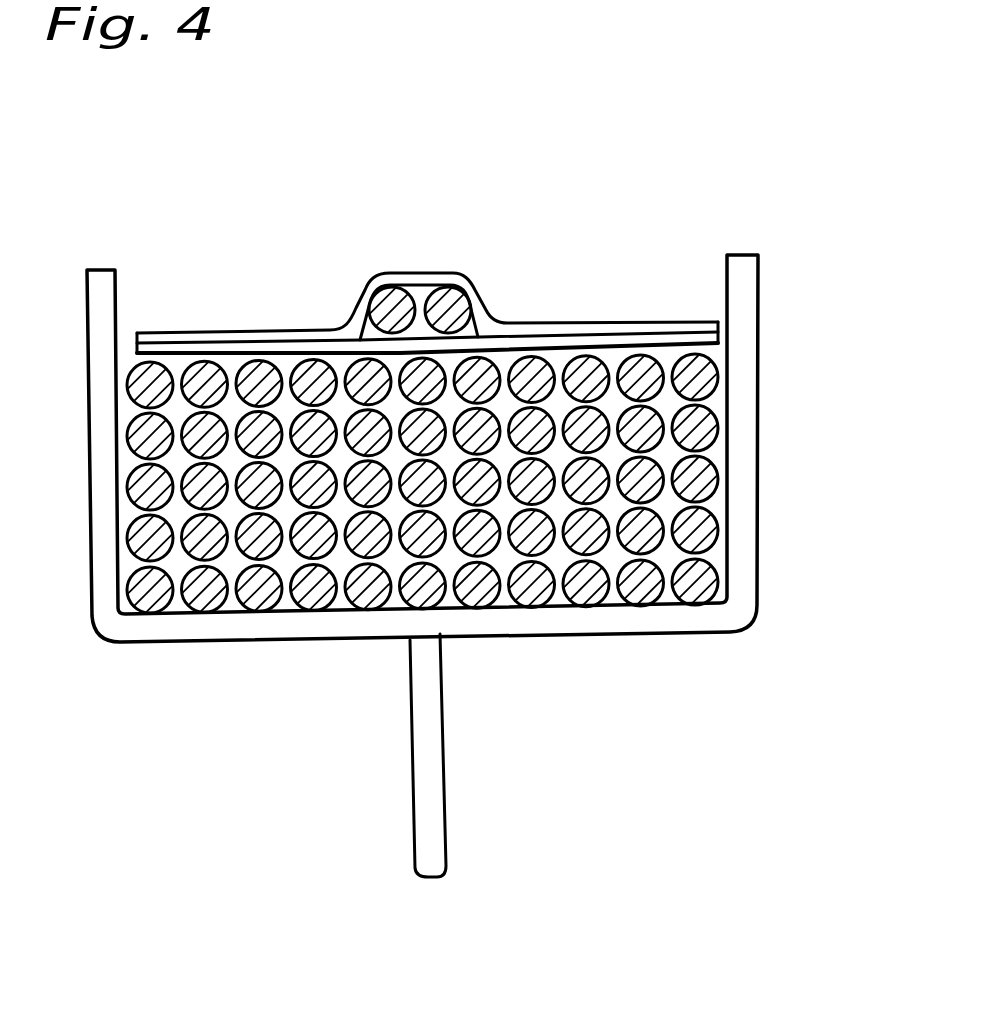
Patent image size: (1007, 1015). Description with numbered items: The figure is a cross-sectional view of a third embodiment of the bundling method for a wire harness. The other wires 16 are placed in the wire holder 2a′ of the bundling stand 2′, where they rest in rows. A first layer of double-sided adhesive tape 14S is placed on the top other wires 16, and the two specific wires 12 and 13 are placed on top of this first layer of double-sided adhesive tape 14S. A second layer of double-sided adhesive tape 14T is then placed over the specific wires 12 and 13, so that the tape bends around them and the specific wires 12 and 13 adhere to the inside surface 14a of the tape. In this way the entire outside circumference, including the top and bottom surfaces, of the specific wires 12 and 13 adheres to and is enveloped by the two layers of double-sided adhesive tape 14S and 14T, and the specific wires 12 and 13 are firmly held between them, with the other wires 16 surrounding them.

The bundling stand 2′ is at (433, 768).
The wire holder 2a′ is at (748, 478).
The specific wire 12 is at (387, 298).
The specific wire 13 is at (450, 300).
The inside surface of the double-sided adhesive tape 14a is at (480, 330).
The second layer of double-sided adhesive tape 14T is at (690, 320).
The first layer of double-sided adhesive tape 14S is at (720, 377).
The other wires 16 is at (253, 598).